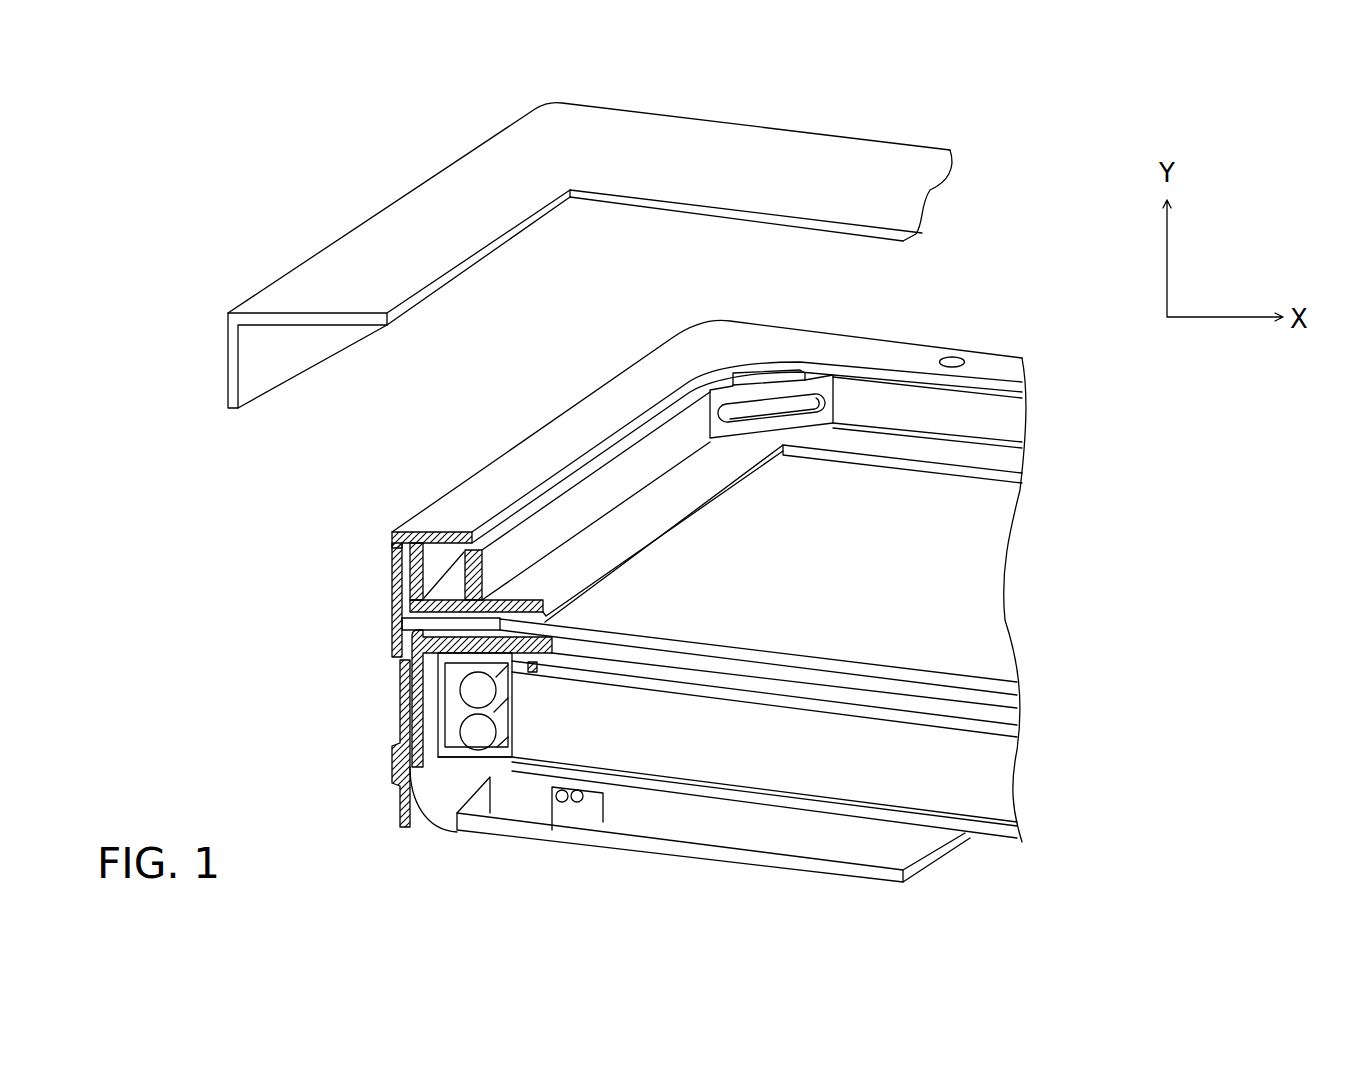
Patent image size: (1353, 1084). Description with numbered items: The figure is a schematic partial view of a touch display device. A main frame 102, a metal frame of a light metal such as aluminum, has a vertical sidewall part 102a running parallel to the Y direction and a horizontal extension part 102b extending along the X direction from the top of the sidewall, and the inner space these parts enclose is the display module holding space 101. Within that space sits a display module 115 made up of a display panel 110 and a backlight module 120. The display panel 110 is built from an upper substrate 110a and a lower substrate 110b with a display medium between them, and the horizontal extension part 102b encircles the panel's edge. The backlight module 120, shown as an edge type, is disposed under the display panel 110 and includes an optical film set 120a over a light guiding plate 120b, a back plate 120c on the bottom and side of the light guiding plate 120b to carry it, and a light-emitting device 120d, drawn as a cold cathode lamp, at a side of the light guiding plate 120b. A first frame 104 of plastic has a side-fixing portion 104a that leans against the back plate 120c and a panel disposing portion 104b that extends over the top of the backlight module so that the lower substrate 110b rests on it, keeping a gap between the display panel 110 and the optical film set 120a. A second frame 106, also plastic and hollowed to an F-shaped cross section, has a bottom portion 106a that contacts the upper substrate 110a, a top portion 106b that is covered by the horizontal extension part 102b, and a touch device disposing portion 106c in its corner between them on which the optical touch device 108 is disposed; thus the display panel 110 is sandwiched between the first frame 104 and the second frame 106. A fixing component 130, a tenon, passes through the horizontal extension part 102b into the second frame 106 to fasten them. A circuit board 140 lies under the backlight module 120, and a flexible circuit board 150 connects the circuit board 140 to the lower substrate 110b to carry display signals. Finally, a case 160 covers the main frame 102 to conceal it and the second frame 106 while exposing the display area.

The display module holding space 101 is at (957, 565).
The main frame 102 is at (631, 488).
The vertical sidewall part 102a is at (398, 572).
The horizontal extension part 102b is at (413, 527).
The first frame 104 is at (396, 728).
The side-fixing portion 104a is at (408, 720).
The panel disposing portion 104b is at (418, 633).
The second frame 106 is at (716, 431).
The bottom portion 106a is at (647, 517).
The top portion 106b is at (577, 477).
The touch device disposing portion 106c is at (708, 415).
The touch device 108 is at (820, 385).
The display panel 110 is at (841, 686).
The upper substrate 110a is at (1003, 683).
The lower substrate 110b is at (1010, 705).
The display module 115 is at (835, 758).
The backlight module 120 is at (810, 770).
The optical film set 120a is at (1020, 735).
The light guiding plate 120b is at (978, 775).
The back plate 120c is at (1007, 830).
The light-emitting device 120d is at (477, 735).
The fixing component 130 is at (952, 357).
The circuit board 140 is at (622, 843).
The flexible circuit board 150 is at (438, 617).
The case 160 is at (388, 243).